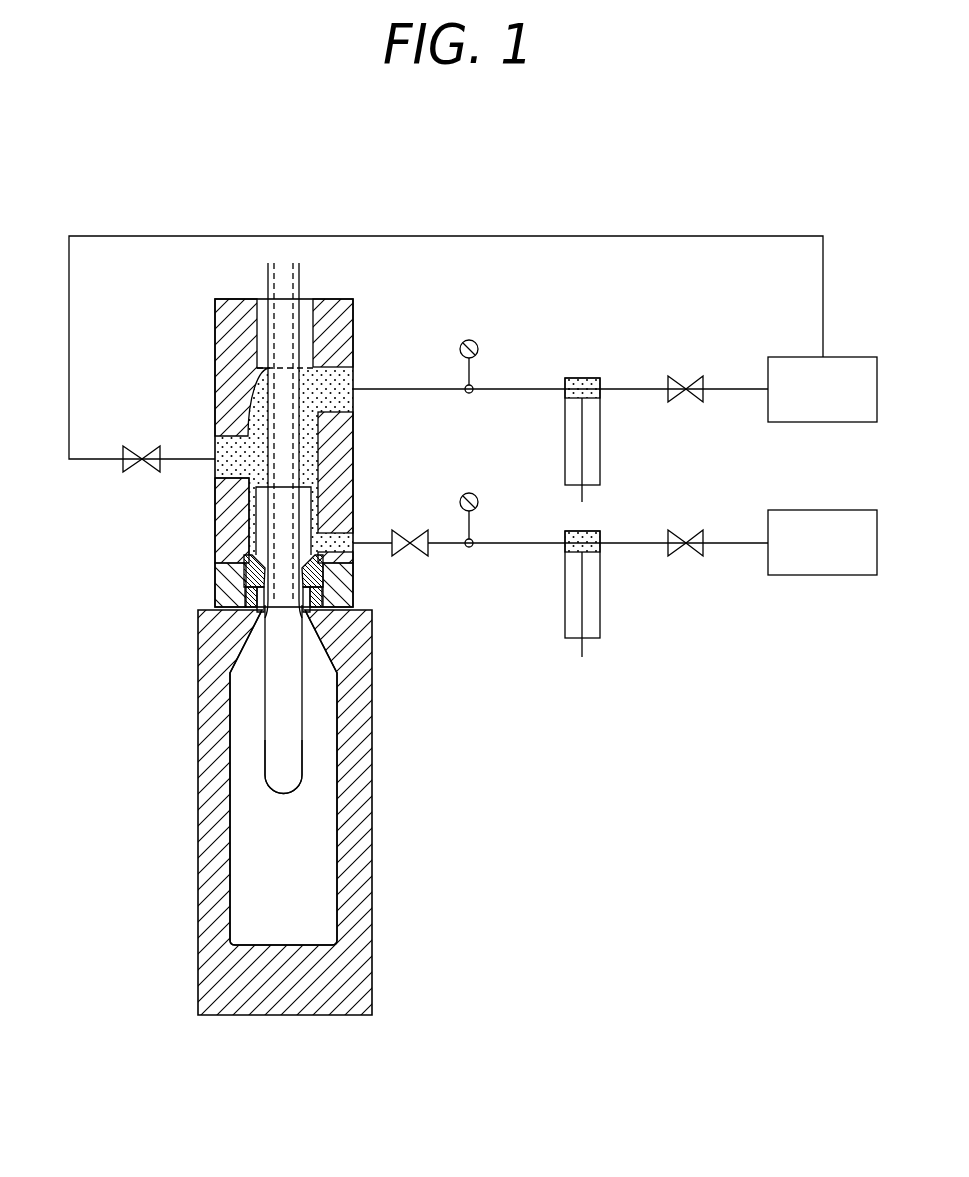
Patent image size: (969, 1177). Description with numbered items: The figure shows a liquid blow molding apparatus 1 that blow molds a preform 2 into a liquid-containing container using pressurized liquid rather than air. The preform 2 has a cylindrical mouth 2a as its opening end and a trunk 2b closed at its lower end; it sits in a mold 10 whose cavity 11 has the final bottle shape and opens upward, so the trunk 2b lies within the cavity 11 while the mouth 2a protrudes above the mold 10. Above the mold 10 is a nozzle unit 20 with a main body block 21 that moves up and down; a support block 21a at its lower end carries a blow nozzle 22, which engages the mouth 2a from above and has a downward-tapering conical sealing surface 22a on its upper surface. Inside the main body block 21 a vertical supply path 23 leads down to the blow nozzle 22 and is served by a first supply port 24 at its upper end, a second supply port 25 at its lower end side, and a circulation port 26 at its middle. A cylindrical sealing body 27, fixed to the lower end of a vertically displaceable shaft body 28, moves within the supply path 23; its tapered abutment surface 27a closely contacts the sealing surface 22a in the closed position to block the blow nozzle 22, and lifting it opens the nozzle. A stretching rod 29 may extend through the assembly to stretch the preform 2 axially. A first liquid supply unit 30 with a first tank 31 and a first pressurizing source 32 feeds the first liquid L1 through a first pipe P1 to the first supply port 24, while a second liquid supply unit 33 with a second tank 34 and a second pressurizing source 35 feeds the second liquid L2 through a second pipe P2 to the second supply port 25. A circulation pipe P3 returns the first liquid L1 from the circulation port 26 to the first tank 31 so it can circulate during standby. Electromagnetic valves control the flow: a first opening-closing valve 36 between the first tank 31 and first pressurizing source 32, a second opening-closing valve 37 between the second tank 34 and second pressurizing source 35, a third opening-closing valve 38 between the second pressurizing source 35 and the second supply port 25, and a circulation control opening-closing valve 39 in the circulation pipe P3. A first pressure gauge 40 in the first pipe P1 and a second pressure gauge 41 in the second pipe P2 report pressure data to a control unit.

The liquid blow molding apparatus 1 is at (497, 188).
The preform 2 is at (313, 706).
The mouth 2a is at (240, 594).
The trunk 2b is at (300, 742).
The mold 10 is at (382, 842).
The cavity 11 is at (313, 877).
The nozzle unit 20 is at (361, 317).
The main body block 21 is at (227, 330).
The support block 21a is at (218, 577).
The blow nozzle 22 is at (335, 580).
The sealing surface 22a is at (270, 565).
The supply path 23 is at (305, 455).
The first supply port 24 is at (345, 378).
The second supply port 25 is at (353, 540).
The circulation port 26 is at (215, 447).
The sealing body 27 is at (249, 503).
The abutment surface 27a is at (235, 557).
The shaft body 28 is at (268, 285).
The stretching rod 29 is at (262, 625).
The first liquid supply unit 30 is at (665, 329).
The first tank 31 is at (822, 389).
The first pressurizing source 32 is at (600, 430).
The second liquid supply unit 33 is at (673, 499).
The second tank 34 is at (822, 542).
The second pressurizing source 35 is at (600, 584).
The first opening-closing valve 36 is at (700, 380).
The second opening-closing valve 37 is at (702, 557).
The third opening-closing valve 38 is at (426, 548).
The circulation control opening-closing valve 39 is at (135, 457).
The first pressure gauge 40 is at (470, 340).
The second pressure gauge 41 is at (469, 493).
The first pipe P1 is at (513, 386).
The second pipe P2 is at (518, 540).
The circulation pipe P3 is at (172, 236).
The first liquid L1 is at (588, 378).
The second liquid L2 is at (590, 531).